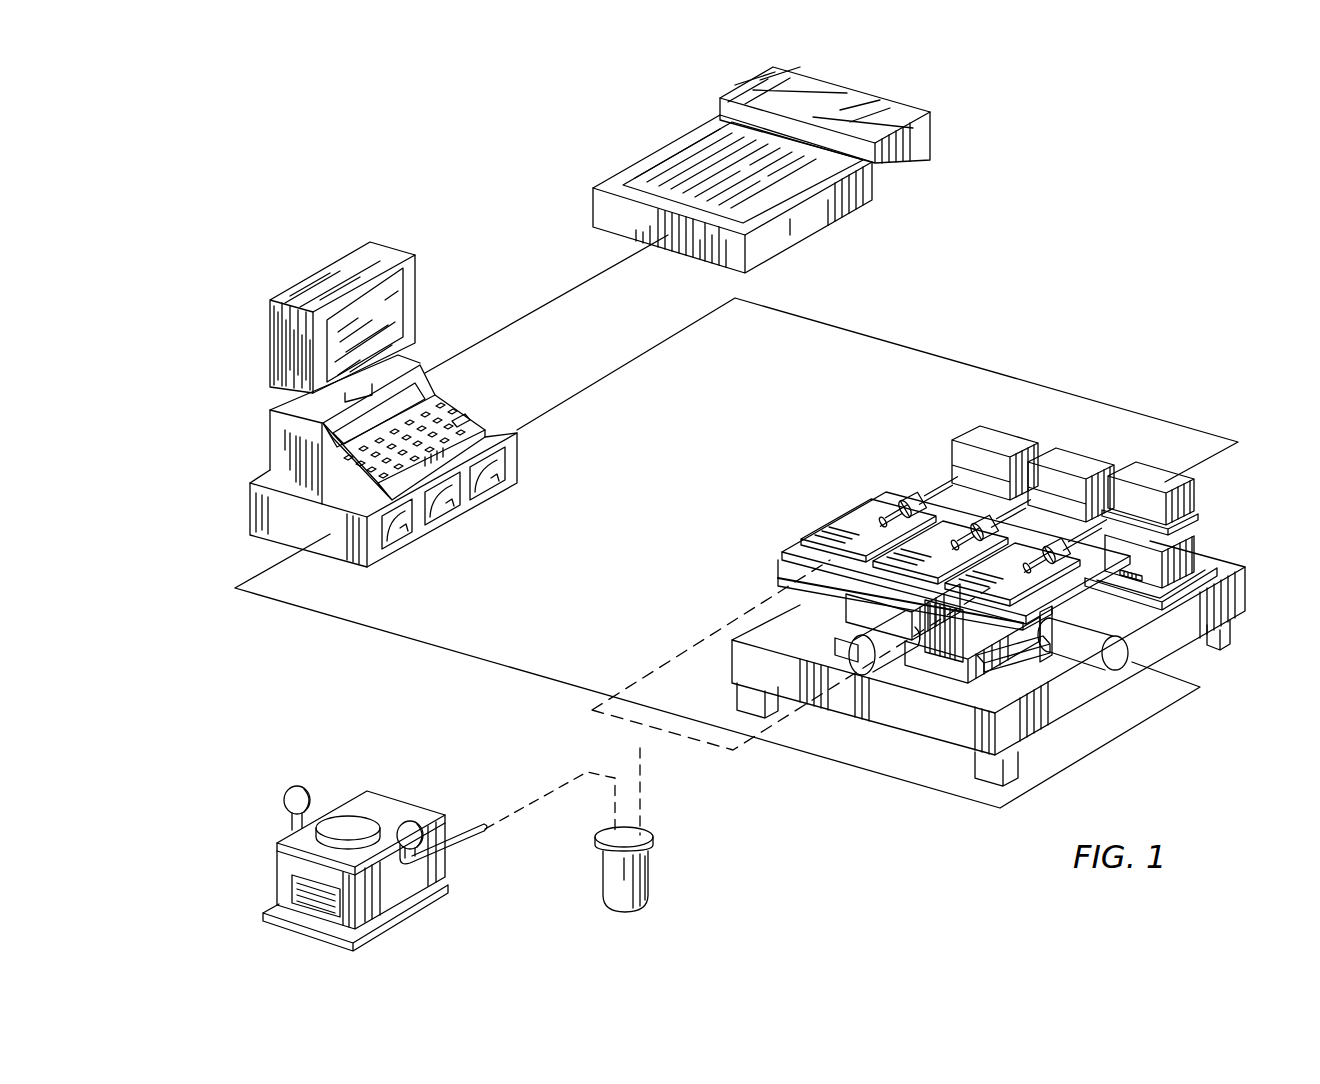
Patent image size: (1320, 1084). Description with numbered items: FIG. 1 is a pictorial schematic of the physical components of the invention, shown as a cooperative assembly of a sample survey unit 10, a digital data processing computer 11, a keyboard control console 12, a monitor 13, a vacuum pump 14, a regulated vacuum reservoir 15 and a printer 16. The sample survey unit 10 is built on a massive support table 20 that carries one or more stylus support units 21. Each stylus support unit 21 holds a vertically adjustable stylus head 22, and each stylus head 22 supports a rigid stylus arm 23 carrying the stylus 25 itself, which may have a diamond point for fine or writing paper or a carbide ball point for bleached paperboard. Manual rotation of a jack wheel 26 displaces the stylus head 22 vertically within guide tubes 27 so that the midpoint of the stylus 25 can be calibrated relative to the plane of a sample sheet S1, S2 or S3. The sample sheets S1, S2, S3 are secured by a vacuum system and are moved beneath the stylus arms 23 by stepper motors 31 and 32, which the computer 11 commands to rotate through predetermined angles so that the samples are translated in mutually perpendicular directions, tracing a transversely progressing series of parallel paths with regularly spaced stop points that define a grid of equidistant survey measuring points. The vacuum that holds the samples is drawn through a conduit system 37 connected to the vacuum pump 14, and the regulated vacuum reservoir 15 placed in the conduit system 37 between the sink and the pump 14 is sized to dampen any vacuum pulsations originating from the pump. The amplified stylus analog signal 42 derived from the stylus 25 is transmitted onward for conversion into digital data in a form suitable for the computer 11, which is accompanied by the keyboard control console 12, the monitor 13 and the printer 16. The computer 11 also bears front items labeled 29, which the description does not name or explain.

The sample survey unit 10 is at (1011, 592).
The digital data processing computer 11 is at (349, 404).
The keyboard control console 12 is at (430, 357).
The monitor 13 is at (425, 304).
The vacuum pump 14 is at (449, 806).
The regulated vacuum reservoir 15 is at (596, 867).
The printer 16 is at (869, 190).
The support table 20 is at (1248, 585).
The stylus support unit 21 is at (1196, 550).
The stylus head 22 is at (998, 440).
The stylus arm 23 is at (920, 492).
The stylus 25 is at (866, 510).
The jack wheel 26 is at (1136, 572).
The guide tubes 27 is at (1196, 513).
The disk drives 29 is at (492, 493).
The stepper motor 31 is at (1092, 684).
The stepper motor 32 is at (845, 640).
The conduit system 37 is at (631, 725).
The amplified stylus analog signal 42 is at (940, 357).
The sample sheet S1 is at (811, 531).
The sample sheet S2 is at (911, 562).
The sample sheet S3 is at (984, 582).